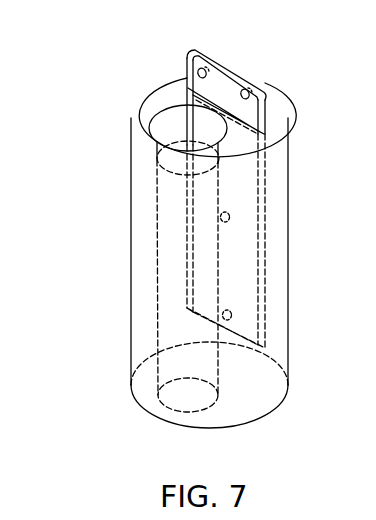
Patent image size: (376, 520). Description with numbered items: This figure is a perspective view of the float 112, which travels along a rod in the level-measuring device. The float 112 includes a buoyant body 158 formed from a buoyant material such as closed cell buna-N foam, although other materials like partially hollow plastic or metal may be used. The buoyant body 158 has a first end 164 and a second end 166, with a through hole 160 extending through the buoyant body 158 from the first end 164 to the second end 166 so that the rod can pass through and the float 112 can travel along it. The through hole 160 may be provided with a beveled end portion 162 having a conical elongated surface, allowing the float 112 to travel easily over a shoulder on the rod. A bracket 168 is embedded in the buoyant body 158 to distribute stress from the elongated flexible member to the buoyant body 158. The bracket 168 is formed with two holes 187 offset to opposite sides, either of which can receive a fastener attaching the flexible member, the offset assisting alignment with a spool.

The float 112 is at (110, 219).
The buoyant body 158 is at (273, 384).
The through hole 160 is at (157, 309).
The beveled end portion 162 is at (160, 128).
The first end 164 is at (156, 93).
The second end 166 is at (258, 423).
The bracket 168 is at (212, 51).
The hole 187 is at (209, 73).